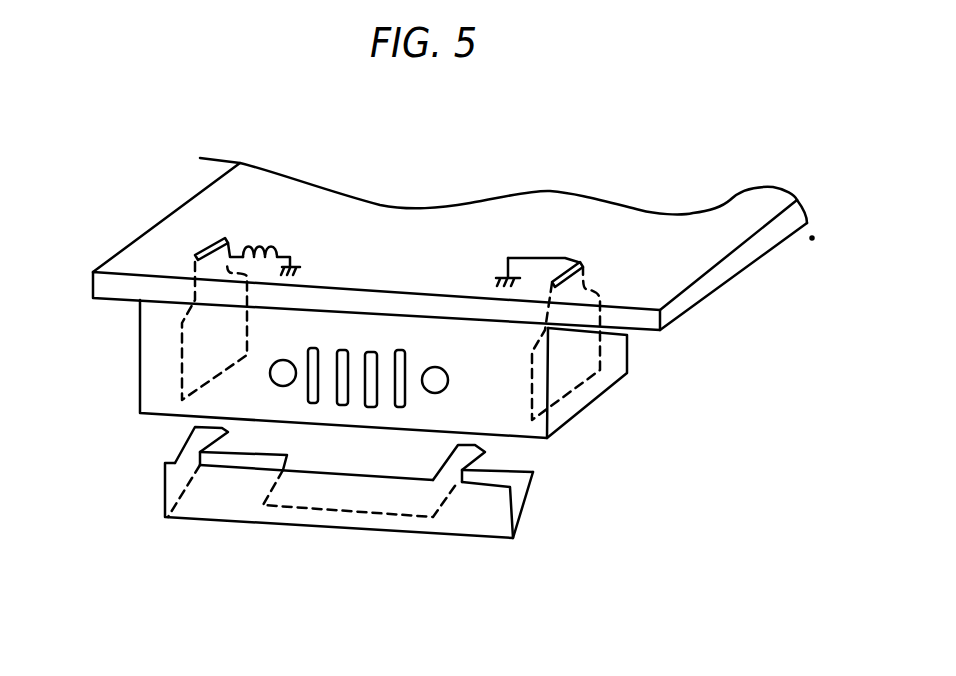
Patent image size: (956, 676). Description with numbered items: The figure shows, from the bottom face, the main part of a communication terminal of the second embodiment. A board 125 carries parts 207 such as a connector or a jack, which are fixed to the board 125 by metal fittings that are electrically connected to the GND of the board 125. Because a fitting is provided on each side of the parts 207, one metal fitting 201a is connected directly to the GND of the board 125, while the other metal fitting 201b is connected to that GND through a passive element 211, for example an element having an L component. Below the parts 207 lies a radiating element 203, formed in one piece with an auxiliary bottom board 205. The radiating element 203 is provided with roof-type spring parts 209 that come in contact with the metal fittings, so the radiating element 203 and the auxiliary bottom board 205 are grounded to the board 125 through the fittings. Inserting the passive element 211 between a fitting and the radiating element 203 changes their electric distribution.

The board 125 is at (760, 245).
The parts 207 is at (620, 373).
The metal fitting 201a is at (607, 397).
The metal fitting 201b is at (182, 353).
The passive element 211 is at (253, 243).
The radiating element 203 is at (472, 510).
The roof-type spring parts 209 is at (195, 427).
The auxiliary bottom board 205 is at (527, 480).